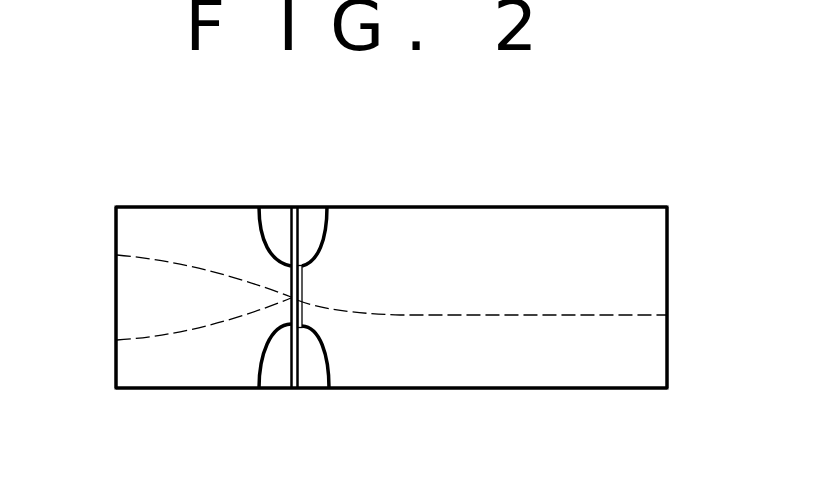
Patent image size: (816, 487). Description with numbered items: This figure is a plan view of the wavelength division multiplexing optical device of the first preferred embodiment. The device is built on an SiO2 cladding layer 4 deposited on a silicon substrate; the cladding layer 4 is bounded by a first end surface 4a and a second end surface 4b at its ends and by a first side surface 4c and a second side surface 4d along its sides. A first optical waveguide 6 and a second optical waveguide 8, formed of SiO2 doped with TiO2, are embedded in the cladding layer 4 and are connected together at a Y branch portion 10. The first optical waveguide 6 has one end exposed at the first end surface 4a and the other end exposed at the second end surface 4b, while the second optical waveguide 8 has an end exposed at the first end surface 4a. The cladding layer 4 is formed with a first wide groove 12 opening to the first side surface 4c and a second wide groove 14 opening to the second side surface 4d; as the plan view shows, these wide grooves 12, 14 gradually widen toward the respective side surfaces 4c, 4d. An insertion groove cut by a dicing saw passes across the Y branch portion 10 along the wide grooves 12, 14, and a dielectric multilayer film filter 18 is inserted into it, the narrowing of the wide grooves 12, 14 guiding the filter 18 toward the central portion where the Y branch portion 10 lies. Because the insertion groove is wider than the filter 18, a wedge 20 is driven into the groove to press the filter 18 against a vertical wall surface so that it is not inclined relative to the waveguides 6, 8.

The cladding layer 4 is at (612, 232).
The first end surface 4a is at (116, 295).
The second end surface 4b is at (668, 270).
The first side surface 4c is at (568, 389).
The second side surface 4d is at (517, 207).
The first optical waveguide 6 is at (470, 316).
The second optical waveguide 8 is at (168, 337).
The Y branch portion 10 is at (288, 297).
The first wide groove 12 is at (278, 380).
The second wide groove 14 is at (313, 217).
The dielectric multilayer film filter 18 is at (297, 380).
The wedge 20 is at (303, 306).